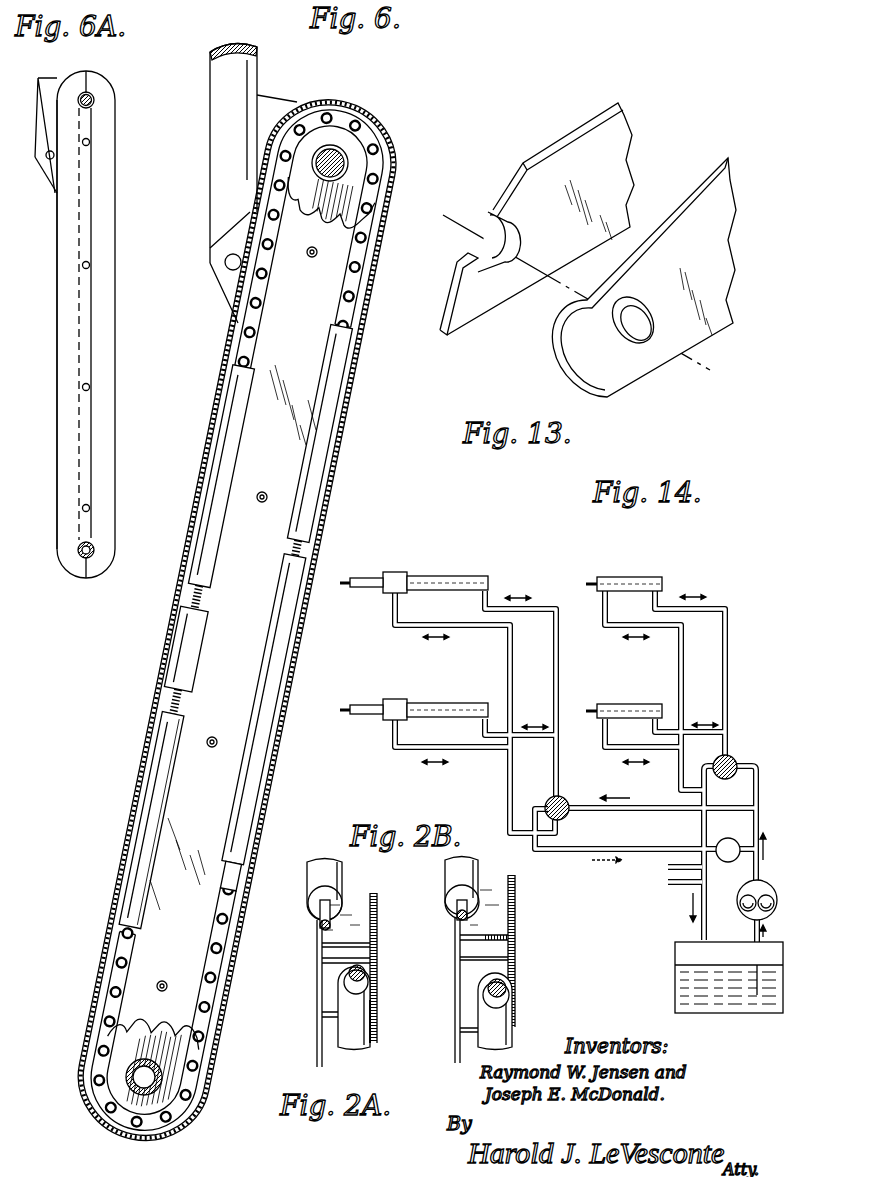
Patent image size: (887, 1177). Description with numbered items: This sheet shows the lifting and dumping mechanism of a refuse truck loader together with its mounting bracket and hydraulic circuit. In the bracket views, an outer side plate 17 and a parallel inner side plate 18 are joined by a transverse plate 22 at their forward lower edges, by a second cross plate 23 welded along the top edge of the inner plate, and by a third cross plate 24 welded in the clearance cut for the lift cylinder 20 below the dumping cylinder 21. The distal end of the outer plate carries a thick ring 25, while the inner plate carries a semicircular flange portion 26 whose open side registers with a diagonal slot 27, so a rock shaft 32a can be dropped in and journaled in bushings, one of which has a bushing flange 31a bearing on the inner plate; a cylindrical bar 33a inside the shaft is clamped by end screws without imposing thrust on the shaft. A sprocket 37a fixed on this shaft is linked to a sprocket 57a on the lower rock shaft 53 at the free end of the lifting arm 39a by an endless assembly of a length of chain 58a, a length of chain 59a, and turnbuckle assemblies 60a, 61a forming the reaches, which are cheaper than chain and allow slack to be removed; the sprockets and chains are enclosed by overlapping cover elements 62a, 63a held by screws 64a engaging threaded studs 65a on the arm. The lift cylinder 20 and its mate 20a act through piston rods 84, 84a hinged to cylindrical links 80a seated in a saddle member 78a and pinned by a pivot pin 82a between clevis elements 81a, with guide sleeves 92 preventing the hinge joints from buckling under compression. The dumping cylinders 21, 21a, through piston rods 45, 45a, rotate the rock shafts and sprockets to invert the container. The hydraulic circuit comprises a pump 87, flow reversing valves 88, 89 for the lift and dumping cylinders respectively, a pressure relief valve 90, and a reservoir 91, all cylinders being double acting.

In FIG. 13, the outer side plate 17 is at (730, 287).
In FIG. 2A, the outer side plate 17 is at (372, 1000).
In FIG. 2B, the outer side plate 17 is at (515, 955).
In FIG. 13, the inner side plate 18 is at (628, 177).
In FIG. 2A, the inner side plate 18 is at (340, 997).
In FIG. 2B, the inner side plate 18 is at (457, 973).
In FIG. 14, the lift cylinder 20 is at (470, 690).
In FIG. 2A, the lift cylinder 20 is at (370, 1033).
In FIG. 2B, the lift cylinder 20 is at (512, 1020).
In FIG. 14, the lift cylinder 20a is at (466, 580).
In FIG. 14, the dumping cylinder 21 is at (638, 704).
In FIG. 2A, the dumping cylinder 21 is at (307, 890).
In FIG. 2B, the dumping cylinder 21 is at (447, 877).
In FIG. 14, the dumping cylinder 21a is at (650, 577).
In FIG. 2A, the transverse plate 22 is at (327, 1013).
In FIG. 2A, the second cross plate 23 is at (367, 915).
In FIG. 2B, the second cross plate 23 is at (512, 917).
In FIG. 2A, the third cross plate 24 is at (323, 977).
In FIG. 2B, the third cross plate 24 is at (503, 973).
In FIG. 13, the ring 25 is at (625, 350).
In FIG. 13, the semicircular flange portion 26 is at (490, 275).
In FIG. 13, the slot 27 is at (462, 255).
In FIG. 6A, the bushing flange 31a is at (48, 183).
In FIG. 6A, the rock shaft 32a is at (95, 93).
In FIG. 6, the rock shaft 32a is at (347, 147).
In FIG. 6A, the cylindrical bar 33a is at (92, 102).
In FIG. 6, the cylindrical bar 33a is at (348, 163).
In FIG. 6, the sprocket 37a is at (313, 215).
In FIG. 6, the lifting arm 39a is at (178, 792).
In FIG. 14, the piston rod 45 is at (590, 709).
In FIG. 2A, the piston rod 45 is at (320, 923).
In FIG. 2B, the piston rod 45 is at (457, 905).
In FIG. 14, the piston rod 45a is at (590, 582).
In FIG. 6A, the rock shaft 53 is at (92, 552).
In FIG. 6, the rock shaft 53 is at (127, 1065).
In FIG. 6, the sprocket 57a is at (122, 1035).
In FIG. 6, the length of chain 58a is at (373, 195).
In FIG. 6, the length of chain 59a is at (110, 998).
In FIG. 6, the turnbuckle assembly 60a is at (257, 783).
In FIG. 6, the turnbuckle assembly 61a is at (160, 744).
In FIG. 6A, the cover element 62a is at (115, 368).
In FIG. 6, the cover element 62a is at (323, 503).
In FIG. 6A, the cover element 63a is at (57, 348).
In FIG. 6, the cover element 63a is at (197, 500).
In FIG. 6A, the screw 64a is at (90, 142).
In FIG. 6, the threaded stud 65a is at (312, 257).
In FIG. 6A, the saddle member 78a is at (40, 100).
In FIG. 6, the saddle member 78a is at (283, 102).
In FIG. 6, the link 80a is at (212, 97).
In FIG. 6, the clevis element 81a is at (232, 300).
In FIG. 6, the pivot pin 82a is at (228, 268).
In FIG. 14, the piston rod 84 is at (346, 715).
In FIG. 2A, the piston rod 84 is at (365, 975).
In FIG. 2B, the piston rod 84 is at (506, 990).
In FIG. 14, the piston rod 84a is at (346, 588).
In FIG. 14, the pump 87 is at (770, 882).
In FIG. 14, the flow reversing valve 88 is at (572, 818).
In FIG. 14, the flow reversing valve 89 is at (737, 760).
In FIG. 14, the pressure relief valve 90 is at (740, 838).
In FIG. 14, the reservoir 91 is at (675, 970).
In FIG. 2A, the guide sleeve 92 is at (344, 1013).
In FIG. 2B, the guide sleeve 92 is at (509, 1000).